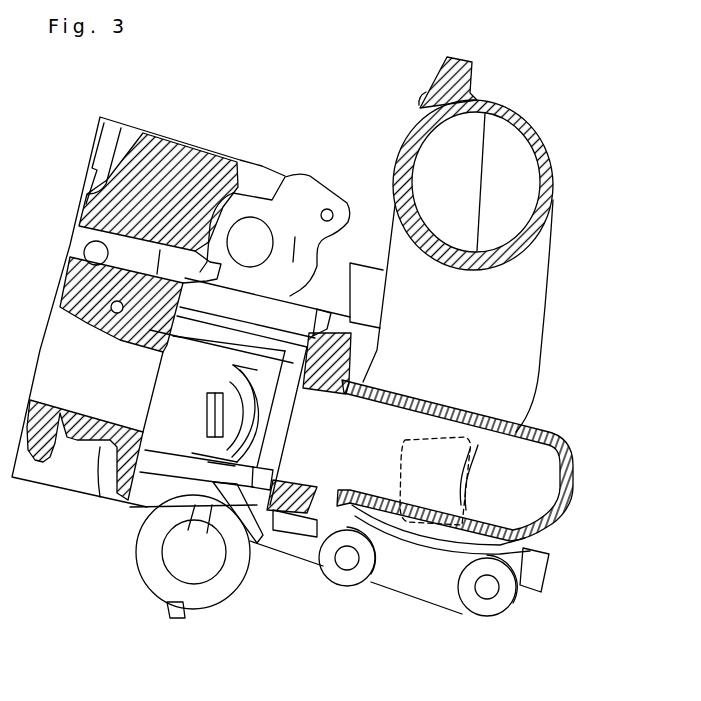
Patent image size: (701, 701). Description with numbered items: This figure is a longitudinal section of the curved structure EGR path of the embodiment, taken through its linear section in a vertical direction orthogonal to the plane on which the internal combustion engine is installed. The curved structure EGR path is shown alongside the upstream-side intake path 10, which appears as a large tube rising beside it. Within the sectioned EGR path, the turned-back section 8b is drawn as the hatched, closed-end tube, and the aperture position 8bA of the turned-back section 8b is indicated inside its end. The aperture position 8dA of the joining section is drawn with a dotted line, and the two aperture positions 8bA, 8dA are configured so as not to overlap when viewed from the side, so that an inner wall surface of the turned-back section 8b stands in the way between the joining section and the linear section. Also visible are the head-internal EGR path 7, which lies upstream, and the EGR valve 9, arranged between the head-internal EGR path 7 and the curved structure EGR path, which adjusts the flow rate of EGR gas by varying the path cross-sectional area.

The head-internal EGR path 7 is at (60, 413).
The EGR valve 9 is at (256, 535).
The upstream-side intake path 10 is at (541, 312).
The turned-back section 8b is at (573, 487).
The aperture position of the turned-back section 8bA is at (528, 497).
The aperture position of the joining section 8dA is at (432, 478).